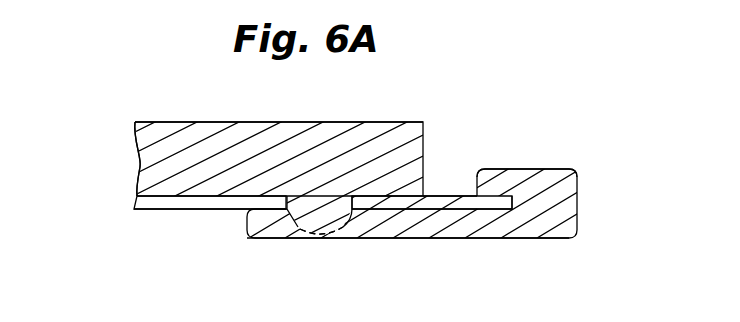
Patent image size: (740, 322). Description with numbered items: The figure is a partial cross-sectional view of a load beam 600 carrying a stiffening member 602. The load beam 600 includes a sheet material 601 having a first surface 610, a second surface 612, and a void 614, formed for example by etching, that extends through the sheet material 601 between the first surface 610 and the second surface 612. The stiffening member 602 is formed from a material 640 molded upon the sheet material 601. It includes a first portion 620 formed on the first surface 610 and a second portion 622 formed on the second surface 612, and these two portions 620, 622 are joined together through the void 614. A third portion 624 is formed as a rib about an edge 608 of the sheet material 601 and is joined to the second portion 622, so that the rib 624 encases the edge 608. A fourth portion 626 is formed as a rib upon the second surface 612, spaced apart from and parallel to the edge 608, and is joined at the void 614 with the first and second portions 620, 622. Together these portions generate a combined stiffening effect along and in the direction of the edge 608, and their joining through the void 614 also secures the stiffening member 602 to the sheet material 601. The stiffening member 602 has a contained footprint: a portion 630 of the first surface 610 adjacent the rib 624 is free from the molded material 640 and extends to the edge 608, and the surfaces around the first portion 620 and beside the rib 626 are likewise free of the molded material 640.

The load beam 600 is at (147, 68).
The stiffening member 602 is at (520, 141).
The edge 608 is at (514, 208).
The first surface 610 is at (152, 195).
The second surface 612 is at (148, 209).
The void 614 is at (313, 195).
The first portion 620 is at (382, 145).
The second portion 622 is at (458, 230).
The third portion 624 is at (565, 187).
The fourth portion 626 is at (288, 220).
The portion of the first surface 630 is at (455, 187).
The molded material 640 is at (173, 137).
The sheet material 601 is at (203, 209).